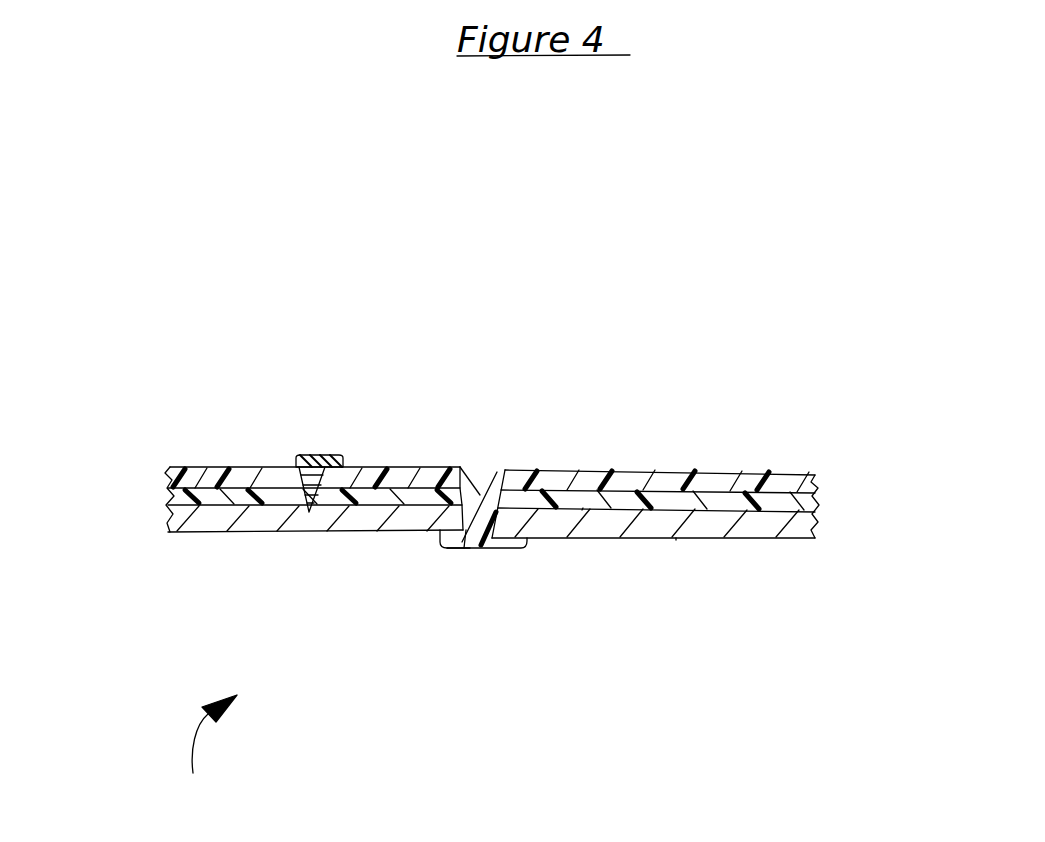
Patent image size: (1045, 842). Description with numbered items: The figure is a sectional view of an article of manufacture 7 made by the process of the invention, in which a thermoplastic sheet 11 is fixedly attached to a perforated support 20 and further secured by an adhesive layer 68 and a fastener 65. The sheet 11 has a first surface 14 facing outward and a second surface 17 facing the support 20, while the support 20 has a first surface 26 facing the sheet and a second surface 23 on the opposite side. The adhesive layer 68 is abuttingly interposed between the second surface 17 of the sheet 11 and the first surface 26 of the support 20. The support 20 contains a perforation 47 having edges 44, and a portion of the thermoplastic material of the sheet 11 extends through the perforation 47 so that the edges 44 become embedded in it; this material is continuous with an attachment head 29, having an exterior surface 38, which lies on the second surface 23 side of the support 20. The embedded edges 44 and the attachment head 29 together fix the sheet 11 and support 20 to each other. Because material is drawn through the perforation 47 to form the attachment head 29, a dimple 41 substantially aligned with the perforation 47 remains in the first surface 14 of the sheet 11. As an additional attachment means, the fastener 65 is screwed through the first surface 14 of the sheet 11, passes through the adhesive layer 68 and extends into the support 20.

The article of manufacture 7 is at (214, 743).
The thermoplastic sheet 11 is at (197, 473).
The first surface of sheet 14 is at (258, 466).
The second surface of sheet 17 is at (593, 488).
The support 20 is at (185, 528).
The second surface of support 23 is at (676, 540).
The first surface of support 26 is at (582, 510).
The attachment head 29 is at (484, 548).
The exterior surface of attachment head 38 is at (452, 546).
The dimple 41 is at (478, 472).
The edges of perforation 44 is at (485, 488).
The perforation 47 is at (464, 548).
The fastener 65 is at (310, 466).
The adhesive layer 68 is at (170, 498).